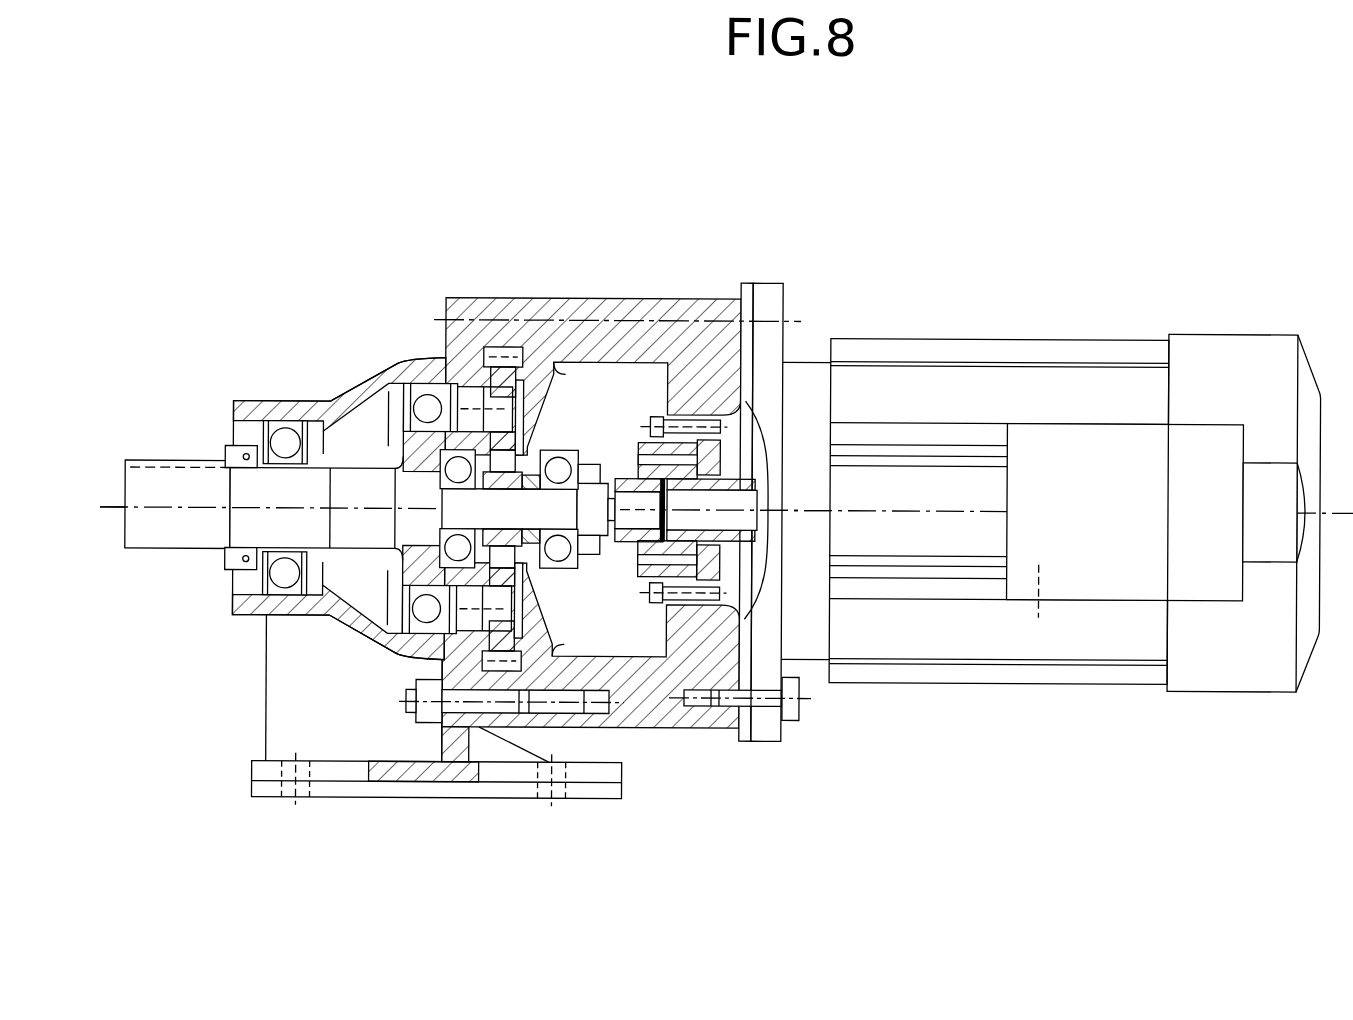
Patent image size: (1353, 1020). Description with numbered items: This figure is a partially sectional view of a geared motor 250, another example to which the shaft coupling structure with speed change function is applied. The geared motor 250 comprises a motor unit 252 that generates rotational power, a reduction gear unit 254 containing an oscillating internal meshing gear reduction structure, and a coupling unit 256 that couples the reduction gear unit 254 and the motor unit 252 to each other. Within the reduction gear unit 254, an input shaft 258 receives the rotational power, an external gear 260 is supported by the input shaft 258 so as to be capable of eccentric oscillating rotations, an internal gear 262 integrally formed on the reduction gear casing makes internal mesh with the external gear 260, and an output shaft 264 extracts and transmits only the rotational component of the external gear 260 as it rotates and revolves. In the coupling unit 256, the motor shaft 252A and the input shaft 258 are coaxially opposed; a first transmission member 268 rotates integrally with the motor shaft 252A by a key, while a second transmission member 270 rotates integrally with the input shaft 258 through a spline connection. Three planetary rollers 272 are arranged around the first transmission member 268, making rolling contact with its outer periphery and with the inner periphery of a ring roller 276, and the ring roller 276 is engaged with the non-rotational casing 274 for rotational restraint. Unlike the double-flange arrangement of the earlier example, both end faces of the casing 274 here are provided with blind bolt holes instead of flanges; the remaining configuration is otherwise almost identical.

The geared motor 250 is at (907, 211).
The motor unit 252 is at (1130, 313).
The motor shaft 252A is at (733, 518).
The reduction gear unit 254 is at (319, 221).
The coupling unit 256 is at (686, 787).
The input shaft 258 is at (602, 533).
The external gear 260 is at (443, 356).
The internal gear 262 is at (505, 346).
The output shaft 264 is at (180, 486).
The first transmission member 268 is at (717, 469).
The second transmission member 270 is at (623, 483).
The planetary rollers 272 is at (698, 465).
The casing 274 is at (665, 294).
The ring roller 276 is at (700, 609).